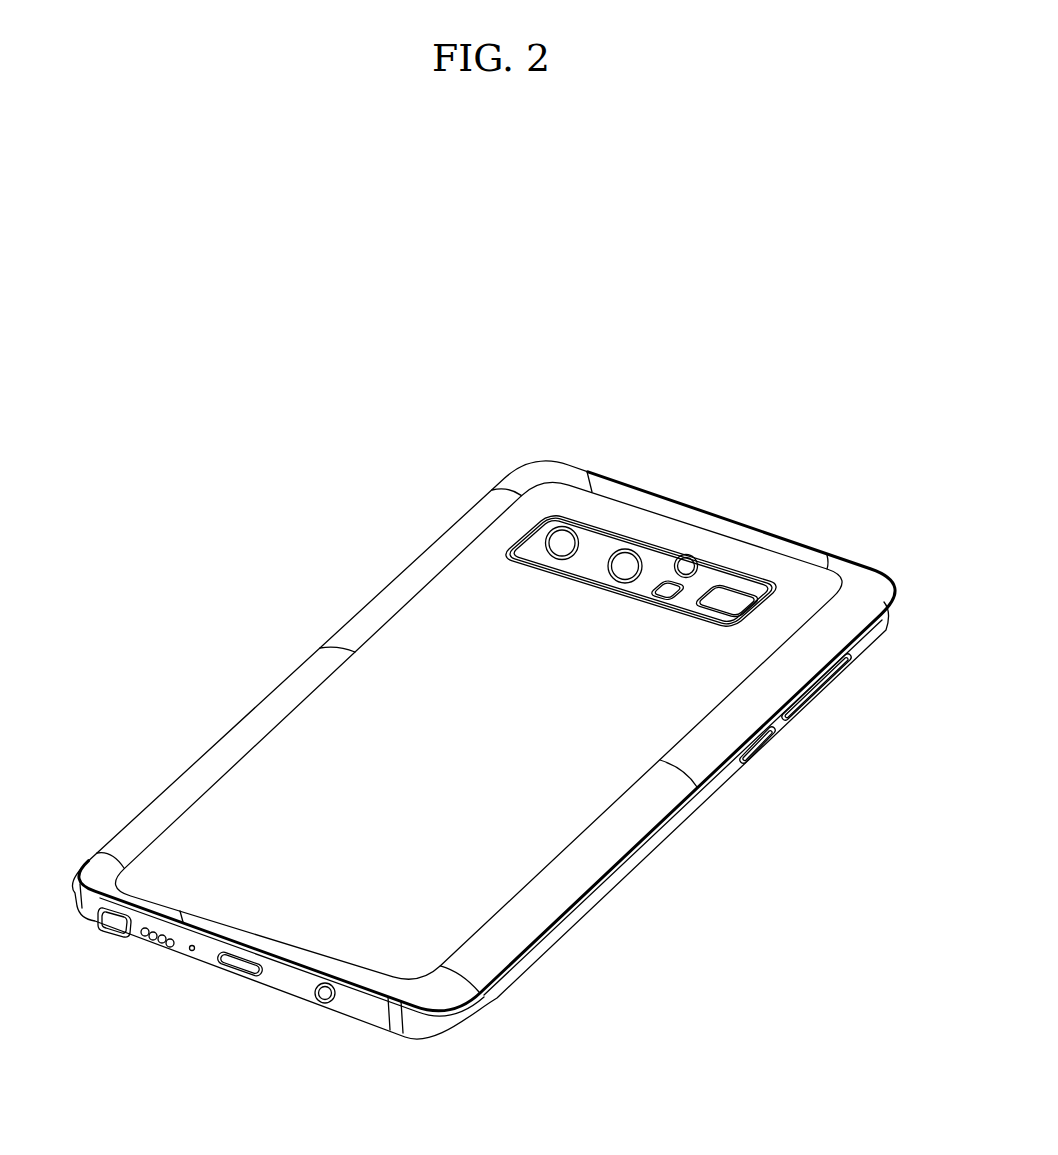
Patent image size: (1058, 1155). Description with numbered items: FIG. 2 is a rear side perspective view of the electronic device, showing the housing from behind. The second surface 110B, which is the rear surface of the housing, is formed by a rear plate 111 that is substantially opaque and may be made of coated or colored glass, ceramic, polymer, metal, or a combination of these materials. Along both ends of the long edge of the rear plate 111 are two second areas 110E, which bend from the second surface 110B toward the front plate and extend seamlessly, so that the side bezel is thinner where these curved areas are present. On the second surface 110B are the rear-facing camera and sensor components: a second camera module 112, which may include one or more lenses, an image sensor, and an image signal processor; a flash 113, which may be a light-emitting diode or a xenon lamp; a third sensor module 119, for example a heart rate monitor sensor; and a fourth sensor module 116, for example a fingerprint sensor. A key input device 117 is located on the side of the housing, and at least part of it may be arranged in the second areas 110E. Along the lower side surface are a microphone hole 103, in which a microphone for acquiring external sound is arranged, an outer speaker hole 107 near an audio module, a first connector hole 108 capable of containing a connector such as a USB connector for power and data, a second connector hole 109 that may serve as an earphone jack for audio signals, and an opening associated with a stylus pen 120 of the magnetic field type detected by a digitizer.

The microphone hole 103 is at (190, 950).
The outer speaker hole 107 is at (152, 936).
The first connector hole 108 is at (243, 967).
The second connector hole 109 is at (325, 997).
The second surface 110B is at (283, 790).
The second areas 110E is at (302, 686).
The rear plate 111 is at (458, 620).
The second camera module 112 is at (624, 566).
The flash 113 is at (692, 562).
The fourth sensor module 116 is at (748, 598).
The key input device 117 is at (800, 718).
The third sensor module 119 is at (662, 582).
The stylus pen 120 is at (113, 923).